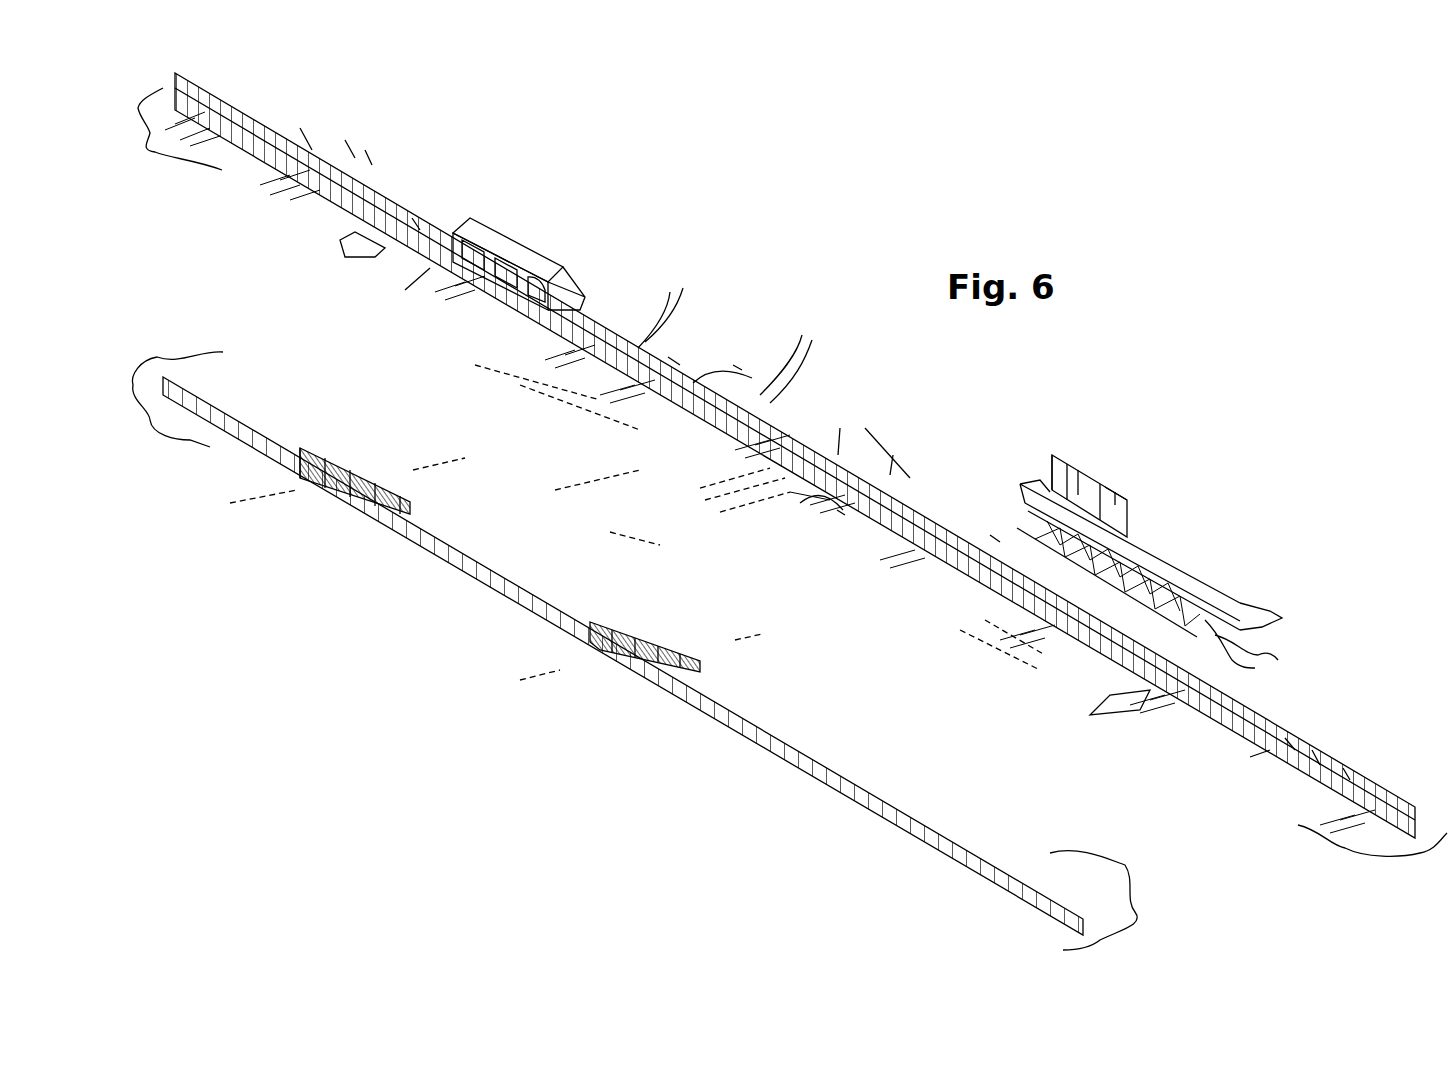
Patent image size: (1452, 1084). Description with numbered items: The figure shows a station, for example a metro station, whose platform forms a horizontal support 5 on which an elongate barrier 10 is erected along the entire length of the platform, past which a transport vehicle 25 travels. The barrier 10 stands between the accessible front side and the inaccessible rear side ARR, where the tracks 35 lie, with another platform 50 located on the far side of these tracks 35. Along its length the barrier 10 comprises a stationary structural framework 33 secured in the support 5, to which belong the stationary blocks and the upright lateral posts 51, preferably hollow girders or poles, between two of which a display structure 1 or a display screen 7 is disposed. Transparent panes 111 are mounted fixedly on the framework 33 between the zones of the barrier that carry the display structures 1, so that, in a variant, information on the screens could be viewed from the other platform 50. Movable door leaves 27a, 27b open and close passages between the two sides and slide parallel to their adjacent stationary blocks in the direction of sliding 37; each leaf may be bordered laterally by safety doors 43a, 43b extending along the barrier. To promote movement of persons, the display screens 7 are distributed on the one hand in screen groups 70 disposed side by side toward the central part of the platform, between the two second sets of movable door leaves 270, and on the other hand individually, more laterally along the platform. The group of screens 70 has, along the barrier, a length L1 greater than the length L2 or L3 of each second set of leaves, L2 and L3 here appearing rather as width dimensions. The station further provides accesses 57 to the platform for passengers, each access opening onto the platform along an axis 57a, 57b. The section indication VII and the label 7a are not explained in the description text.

The information display structure 1 is at (348, 222).
The support 5 is at (155, 150).
The display screen 7 is at (1060, 455).
The bracket flange 7a is at (1065, 478).
The barrier 10 is at (893, 455).
The transport vehicle 25 is at (528, 242).
The first movable door leaf 27a is at (412, 218).
The second movable door leaf 27b is at (837, 510).
The structural framework 33 is at (1122, 488).
The tracks 35 is at (1228, 648).
The direction of sliding 37 is at (619, 531).
The first safety door 43a is at (300, 128).
The second safety door 43b is at (345, 140).
The other platform 50 is at (1243, 608).
The upright lateral post 51 is at (365, 150).
The access 57 is at (385, 478).
The access axis 57a is at (447, 473).
The access axis 57b is at (730, 640).
The screen group 70 is at (865, 428).
The transparent pane 111 is at (318, 160).
The second sets of first and second movable door leaves 270 is at (840, 428).
The section line VII is at (733, 365).
The length of the screen group L1 is at (732, 490).
The length of a second set L2 is at (1000, 646).
The length of a second set L3 is at (557, 397).
The inaccessible rear side ARR is at (777, 490).